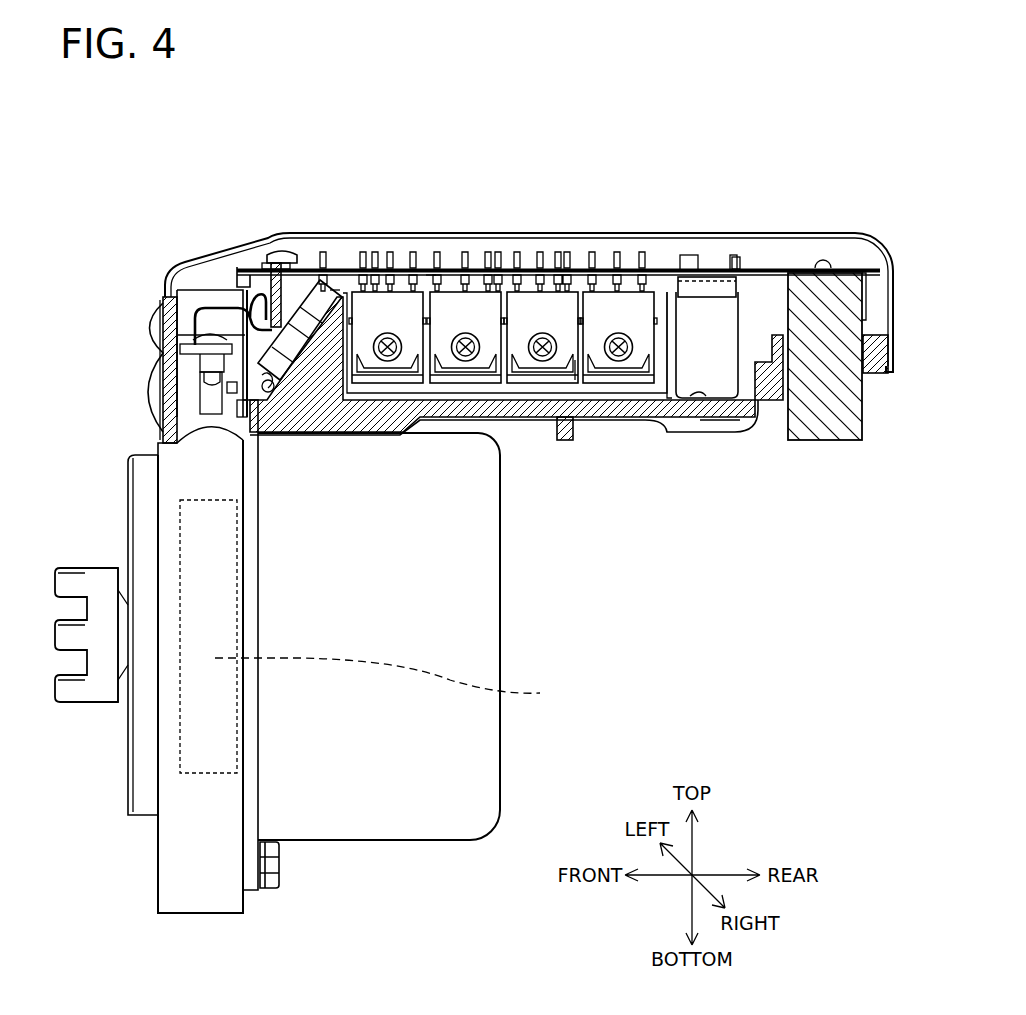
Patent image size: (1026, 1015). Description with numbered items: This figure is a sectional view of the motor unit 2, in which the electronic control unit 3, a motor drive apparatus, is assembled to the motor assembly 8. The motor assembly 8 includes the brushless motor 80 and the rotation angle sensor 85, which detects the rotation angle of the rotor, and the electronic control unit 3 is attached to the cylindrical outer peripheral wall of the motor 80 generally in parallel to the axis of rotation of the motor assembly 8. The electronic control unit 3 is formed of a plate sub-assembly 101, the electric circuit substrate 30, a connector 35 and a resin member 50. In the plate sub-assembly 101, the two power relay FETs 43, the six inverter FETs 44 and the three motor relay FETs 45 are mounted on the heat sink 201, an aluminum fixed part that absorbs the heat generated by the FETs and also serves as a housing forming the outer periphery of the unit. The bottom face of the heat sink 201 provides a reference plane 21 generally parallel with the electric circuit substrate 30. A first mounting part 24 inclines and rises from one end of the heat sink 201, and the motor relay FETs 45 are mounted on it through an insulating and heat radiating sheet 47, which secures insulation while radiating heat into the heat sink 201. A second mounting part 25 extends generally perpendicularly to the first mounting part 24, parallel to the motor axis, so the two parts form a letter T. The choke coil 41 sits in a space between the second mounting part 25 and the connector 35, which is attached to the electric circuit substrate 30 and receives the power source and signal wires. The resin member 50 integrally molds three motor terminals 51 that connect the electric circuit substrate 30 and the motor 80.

The motor unit 2 is at (608, 540).
The electronic control unit 3 is at (622, 502).
The motor assembly 8 is at (570, 603).
The reference plane 21 is at (697, 392).
The first mounting part 24 is at (335, 292).
The second mounting part 25 is at (429, 285).
The electric circuit substrate 30 is at (757, 268).
The connector 35 is at (830, 408).
The choke coil 41 is at (712, 320).
The power relay FET 43 is at (604, 305).
The inverter FET 44 is at (386, 305).
The motor relay FET 45 is at (312, 293).
The insulating and heat radiating sheet 47 is at (267, 392).
The resin member 50 is at (283, 253).
The motor terminal 51 is at (240, 297).
The motor 80 is at (450, 625).
The rotation angle sensor 85 is at (522, 694).
The plate sub-assembly 101 is at (731, 427).
The heat sink 201 is at (513, 408).